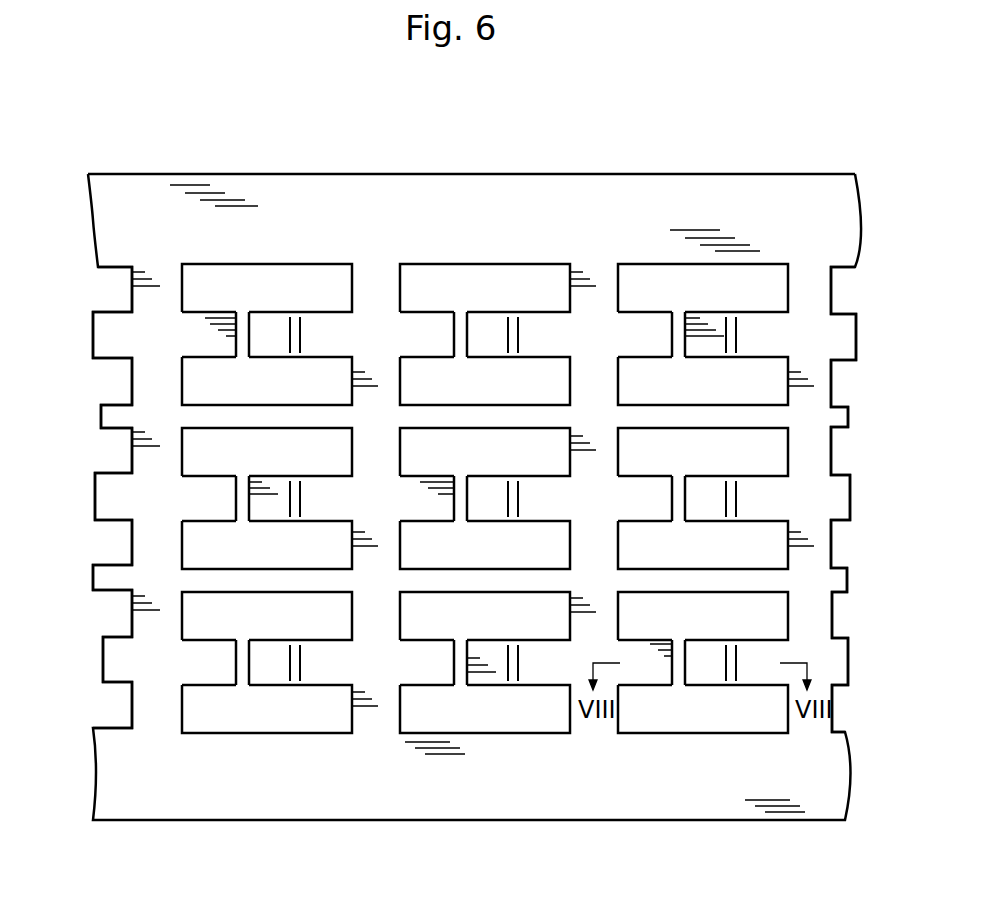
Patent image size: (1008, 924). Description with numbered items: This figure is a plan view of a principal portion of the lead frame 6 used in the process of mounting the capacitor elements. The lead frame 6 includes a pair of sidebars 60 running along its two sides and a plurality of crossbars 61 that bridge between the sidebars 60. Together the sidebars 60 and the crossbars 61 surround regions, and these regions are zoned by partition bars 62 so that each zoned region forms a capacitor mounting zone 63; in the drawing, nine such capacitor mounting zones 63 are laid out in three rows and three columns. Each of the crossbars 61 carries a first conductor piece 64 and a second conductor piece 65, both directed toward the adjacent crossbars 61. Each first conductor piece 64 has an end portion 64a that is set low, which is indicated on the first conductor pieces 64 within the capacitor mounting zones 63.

The lead frame 6 is at (441, 167).
The sidebar 60 is at (556, 188).
The crossbar 61 is at (141, 385).
The partition bar 62 is at (508, 412).
The capacitor mounting zone 63 is at (474, 498).
The first conductor piece 64 is at (267, 340).
The end portion 64a is at (487, 512).
The second conductor piece 65 is at (208, 325).